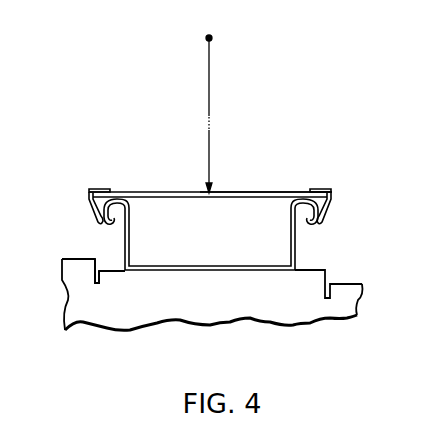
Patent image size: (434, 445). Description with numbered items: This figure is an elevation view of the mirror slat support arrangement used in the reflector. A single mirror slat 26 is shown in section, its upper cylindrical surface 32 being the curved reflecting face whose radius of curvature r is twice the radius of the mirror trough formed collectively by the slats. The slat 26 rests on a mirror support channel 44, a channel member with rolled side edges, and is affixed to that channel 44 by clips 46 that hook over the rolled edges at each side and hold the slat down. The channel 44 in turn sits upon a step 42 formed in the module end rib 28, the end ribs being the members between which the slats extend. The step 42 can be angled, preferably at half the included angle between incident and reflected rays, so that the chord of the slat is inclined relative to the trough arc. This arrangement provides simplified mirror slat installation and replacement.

The radius of curvature r is at (212, 95).
The mirror slat 26 is at (158, 194).
The cylindrical surface 32 is at (260, 193).
The mirror support channel 44 is at (297, 245).
The clip 46 is at (99, 188).
The module end rib 28 is at (289, 305).
The step 42 is at (110, 272).